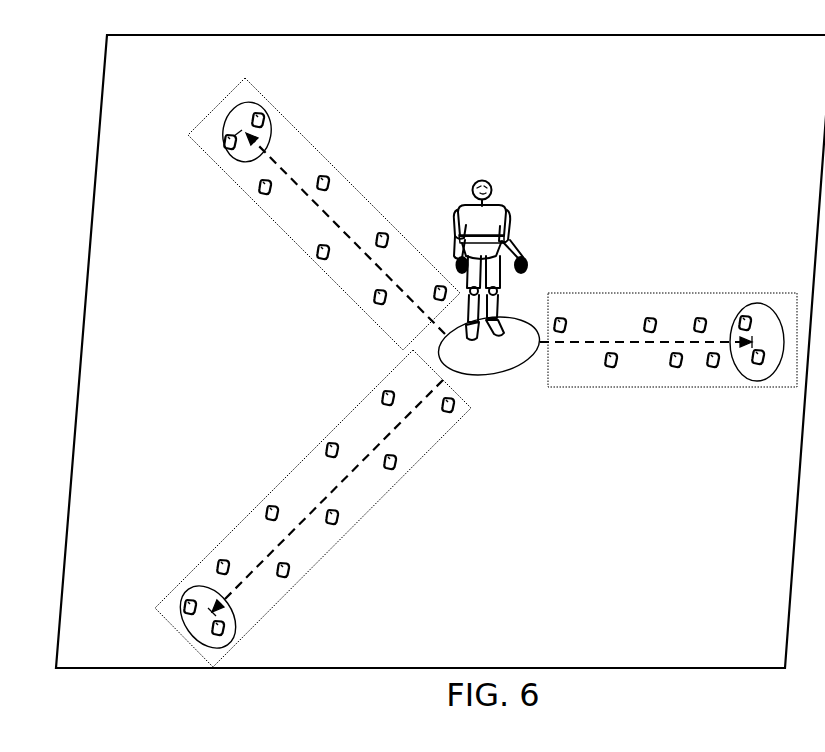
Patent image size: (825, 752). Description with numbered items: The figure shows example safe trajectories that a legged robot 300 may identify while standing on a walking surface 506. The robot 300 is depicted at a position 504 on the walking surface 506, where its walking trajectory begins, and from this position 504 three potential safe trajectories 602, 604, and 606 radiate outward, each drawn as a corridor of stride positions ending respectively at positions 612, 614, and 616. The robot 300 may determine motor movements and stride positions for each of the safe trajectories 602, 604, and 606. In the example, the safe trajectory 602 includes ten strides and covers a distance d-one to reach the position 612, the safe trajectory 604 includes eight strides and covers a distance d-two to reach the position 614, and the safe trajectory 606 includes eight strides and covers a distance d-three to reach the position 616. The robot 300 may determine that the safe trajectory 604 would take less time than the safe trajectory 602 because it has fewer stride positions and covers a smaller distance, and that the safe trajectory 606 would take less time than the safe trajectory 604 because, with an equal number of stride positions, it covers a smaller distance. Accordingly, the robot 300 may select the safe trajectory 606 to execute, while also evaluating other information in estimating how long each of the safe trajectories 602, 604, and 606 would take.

The robot 300 is at (508, 200).
The position 504 is at (483, 376).
The walking surface 506 is at (717, 622).
The safe trajectory 602 is at (357, 405).
The safe trajectory 604 is at (318, 147).
The safe trajectory 606 is at (695, 294).
The position 612 is at (194, 586).
The position 614 is at (243, 102).
The position 616 is at (763, 303).